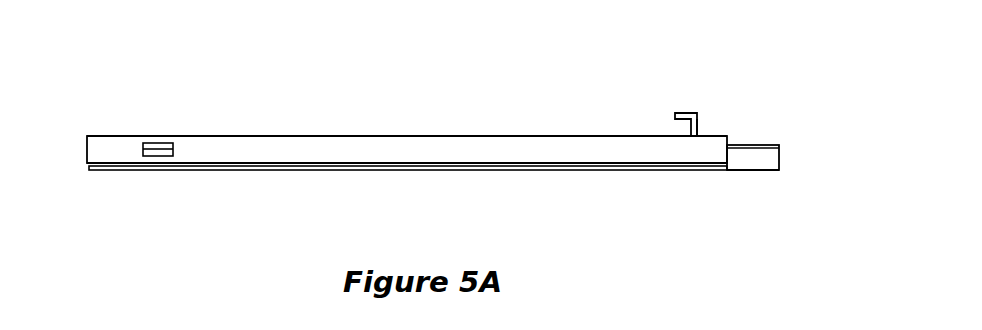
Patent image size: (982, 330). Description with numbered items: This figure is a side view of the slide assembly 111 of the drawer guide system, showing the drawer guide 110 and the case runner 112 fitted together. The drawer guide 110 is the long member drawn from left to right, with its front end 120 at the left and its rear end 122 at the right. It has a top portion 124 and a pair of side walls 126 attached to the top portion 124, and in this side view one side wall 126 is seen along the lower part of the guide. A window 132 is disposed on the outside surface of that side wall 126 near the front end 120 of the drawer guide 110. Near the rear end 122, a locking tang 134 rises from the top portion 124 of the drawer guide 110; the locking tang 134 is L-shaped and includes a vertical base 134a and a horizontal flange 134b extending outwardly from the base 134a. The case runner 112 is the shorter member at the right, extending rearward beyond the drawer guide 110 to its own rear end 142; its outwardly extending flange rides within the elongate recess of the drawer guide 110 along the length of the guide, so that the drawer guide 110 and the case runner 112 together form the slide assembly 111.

The drawer guide 110 is at (662, 152).
The slide assembly 111 is at (430, 95).
The case runner 112 is at (750, 151).
The front end 120 is at (87, 147).
The rear end 122 is at (728, 138).
The top portion 124 is at (457, 135).
The side walls 126 is at (463, 155).
The window 132 is at (157, 157).
The locking tang 134 is at (698, 121).
The vertical base 134a is at (699, 127).
The horizontal flange 134b is at (685, 112).
The rear end 142 is at (780, 155).